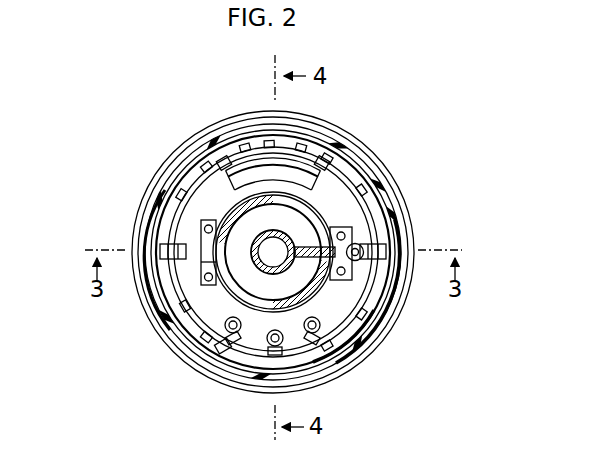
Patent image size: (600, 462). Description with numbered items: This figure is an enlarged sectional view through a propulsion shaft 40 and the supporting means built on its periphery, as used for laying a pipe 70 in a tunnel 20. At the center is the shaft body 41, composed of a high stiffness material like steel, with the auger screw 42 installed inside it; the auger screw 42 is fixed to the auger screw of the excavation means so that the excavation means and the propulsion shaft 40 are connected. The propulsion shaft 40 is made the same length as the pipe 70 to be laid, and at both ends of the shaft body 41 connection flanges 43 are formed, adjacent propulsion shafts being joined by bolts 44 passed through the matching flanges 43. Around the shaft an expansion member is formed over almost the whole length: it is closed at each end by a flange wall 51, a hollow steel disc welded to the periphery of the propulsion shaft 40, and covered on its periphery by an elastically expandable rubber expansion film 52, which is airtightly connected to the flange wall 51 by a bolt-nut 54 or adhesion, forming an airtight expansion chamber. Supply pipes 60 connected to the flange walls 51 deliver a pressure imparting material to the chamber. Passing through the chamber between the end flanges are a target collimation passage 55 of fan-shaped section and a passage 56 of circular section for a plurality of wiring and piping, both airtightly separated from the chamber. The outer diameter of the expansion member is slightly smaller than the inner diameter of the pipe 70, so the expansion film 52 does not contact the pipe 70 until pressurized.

The tunnel 20 is at (378, 173).
The pipe to be laid 70 is at (222, 128).
The supply pipe 60 is at (383, 300).
The shaft body 41 is at (350, 340).
The expansion film 52 is at (375, 208).
The bolt-nut 54 is at (223, 348).
The target collimation passage 55 is at (250, 180).
The propulsion shaft 40 is at (325, 207).
The auger screw 42 is at (258, 236).
The connection flange 43 is at (201, 246).
The bolt 44 is at (203, 270).
The flange wall 51 is at (357, 230).
The passage 56 is at (238, 333).